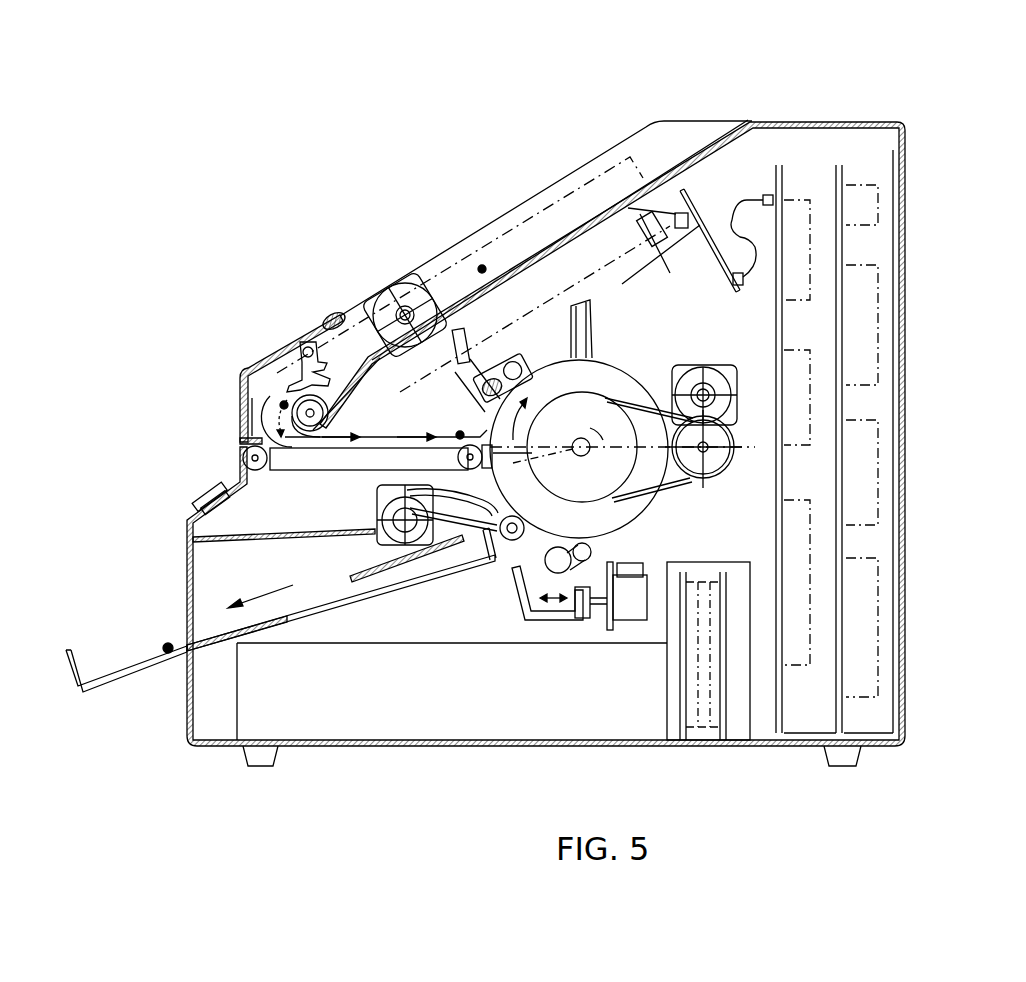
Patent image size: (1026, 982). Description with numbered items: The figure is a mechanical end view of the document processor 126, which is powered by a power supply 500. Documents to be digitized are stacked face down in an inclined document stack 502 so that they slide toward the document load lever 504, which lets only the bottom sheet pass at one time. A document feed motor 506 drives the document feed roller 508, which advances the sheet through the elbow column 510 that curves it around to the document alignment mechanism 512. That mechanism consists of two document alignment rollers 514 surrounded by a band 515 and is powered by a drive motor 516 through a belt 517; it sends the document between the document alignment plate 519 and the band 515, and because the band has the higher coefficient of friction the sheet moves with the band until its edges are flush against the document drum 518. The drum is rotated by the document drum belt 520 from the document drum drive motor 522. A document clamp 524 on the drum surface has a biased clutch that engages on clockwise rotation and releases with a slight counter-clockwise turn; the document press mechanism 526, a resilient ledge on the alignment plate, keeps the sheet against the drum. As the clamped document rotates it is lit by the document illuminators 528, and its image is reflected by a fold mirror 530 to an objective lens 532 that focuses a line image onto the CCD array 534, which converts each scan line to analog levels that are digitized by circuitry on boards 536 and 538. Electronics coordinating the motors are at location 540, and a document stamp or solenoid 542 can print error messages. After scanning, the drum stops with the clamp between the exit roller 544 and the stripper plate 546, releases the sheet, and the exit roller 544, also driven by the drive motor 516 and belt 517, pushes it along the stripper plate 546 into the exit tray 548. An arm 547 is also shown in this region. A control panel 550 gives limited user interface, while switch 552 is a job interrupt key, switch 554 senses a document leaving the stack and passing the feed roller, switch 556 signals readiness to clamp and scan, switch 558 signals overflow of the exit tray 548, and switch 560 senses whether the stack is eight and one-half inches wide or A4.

The document processor 126 is at (474, 100).
The power supply 500 is at (408, 705).
The document stack 502 is at (533, 217).
The document load lever 504 is at (328, 316).
The document feed motor 506 is at (408, 282).
The document feed roller 508 is at (324, 430).
The elbow column 510 is at (238, 430).
The document alignment mechanism 512 is at (385, 440).
The document alignment rollers 514 is at (254, 470).
The band 515 is at (343, 473).
The drive motor 516 is at (368, 580).
The belt 517 is at (405, 544).
The document drum 518 is at (610, 363).
The document alignment plate 519 is at (393, 436).
The document drum belt 520 is at (728, 472).
The document drum drive motor 522 is at (704, 366).
The document clamp 524 is at (503, 446).
The document press mechanism 526 is at (482, 414).
The document illuminators 528 is at (506, 348).
The fold mirror 530 is at (466, 330).
The objective lens 532 is at (651, 216).
The CCD array 534 is at (690, 212).
The circuit board 536 is at (781, 163).
The circuit board 538 is at (850, 138).
The motor coordination electronics location 540 is at (727, 729).
The document stamp or solenoid 542 is at (605, 612).
The exit roller 544 is at (504, 542).
The stripper plate 546 is at (370, 553).
The arm 547 is at (450, 552).
The exit tray 548 is at (128, 657).
The control panel 550 is at (207, 474).
The job interrupt key 552 is at (200, 490).
The switch 554 is at (274, 399).
The switch 556 is at (459, 432).
The switch 558 is at (167, 643).
The switch 560 is at (481, 265).